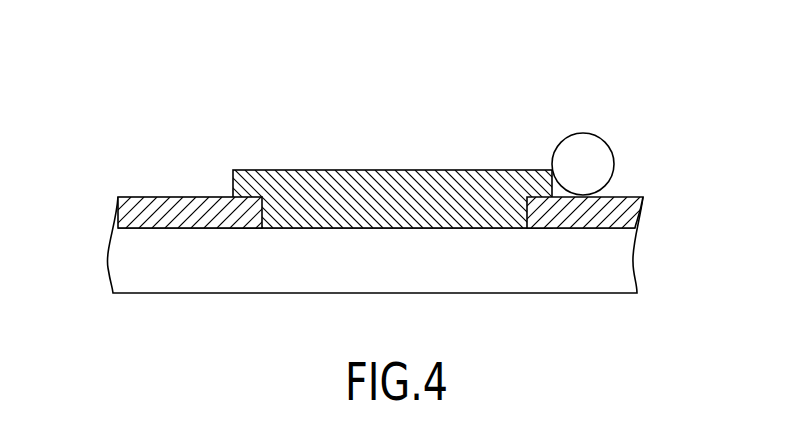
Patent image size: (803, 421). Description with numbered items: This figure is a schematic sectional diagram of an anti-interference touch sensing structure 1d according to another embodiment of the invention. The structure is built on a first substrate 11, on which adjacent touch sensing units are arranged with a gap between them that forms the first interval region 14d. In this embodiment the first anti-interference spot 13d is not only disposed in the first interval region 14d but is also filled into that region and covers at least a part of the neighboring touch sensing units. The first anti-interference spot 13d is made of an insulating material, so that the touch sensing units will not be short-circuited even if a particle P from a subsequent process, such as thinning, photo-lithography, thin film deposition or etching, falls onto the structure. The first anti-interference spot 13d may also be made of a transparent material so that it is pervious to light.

The anti-interference touch sensing structure 1d is at (127, 40).
The first substrate 11 is at (618, 270).
The first anti-interference spot 13d is at (368, 192).
The first interval region 14d is at (520, 117).
The particles P is at (580, 138).